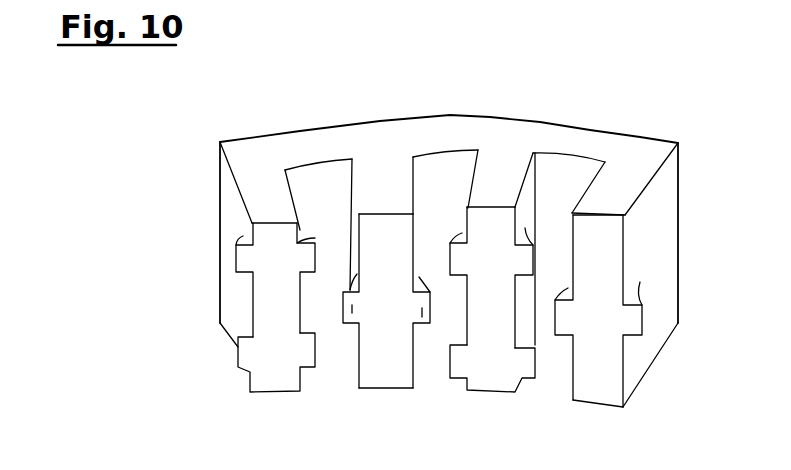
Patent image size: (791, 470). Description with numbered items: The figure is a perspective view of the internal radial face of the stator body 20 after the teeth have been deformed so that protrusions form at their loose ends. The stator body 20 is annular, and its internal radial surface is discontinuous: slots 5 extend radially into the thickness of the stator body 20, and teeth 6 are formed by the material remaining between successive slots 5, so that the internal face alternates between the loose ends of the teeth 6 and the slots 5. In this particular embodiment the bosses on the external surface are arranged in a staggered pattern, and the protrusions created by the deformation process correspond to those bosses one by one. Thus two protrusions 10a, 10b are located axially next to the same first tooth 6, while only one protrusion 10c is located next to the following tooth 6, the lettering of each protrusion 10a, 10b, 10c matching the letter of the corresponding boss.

The stator body 20 is at (268, 112).
The slots 5 is at (565, 173).
The teeth 6 is at (263, 193).
The protrusion 10a is at (308, 272).
The protrusion 10b is at (307, 362).
The protrusion 10c is at (467, 333).